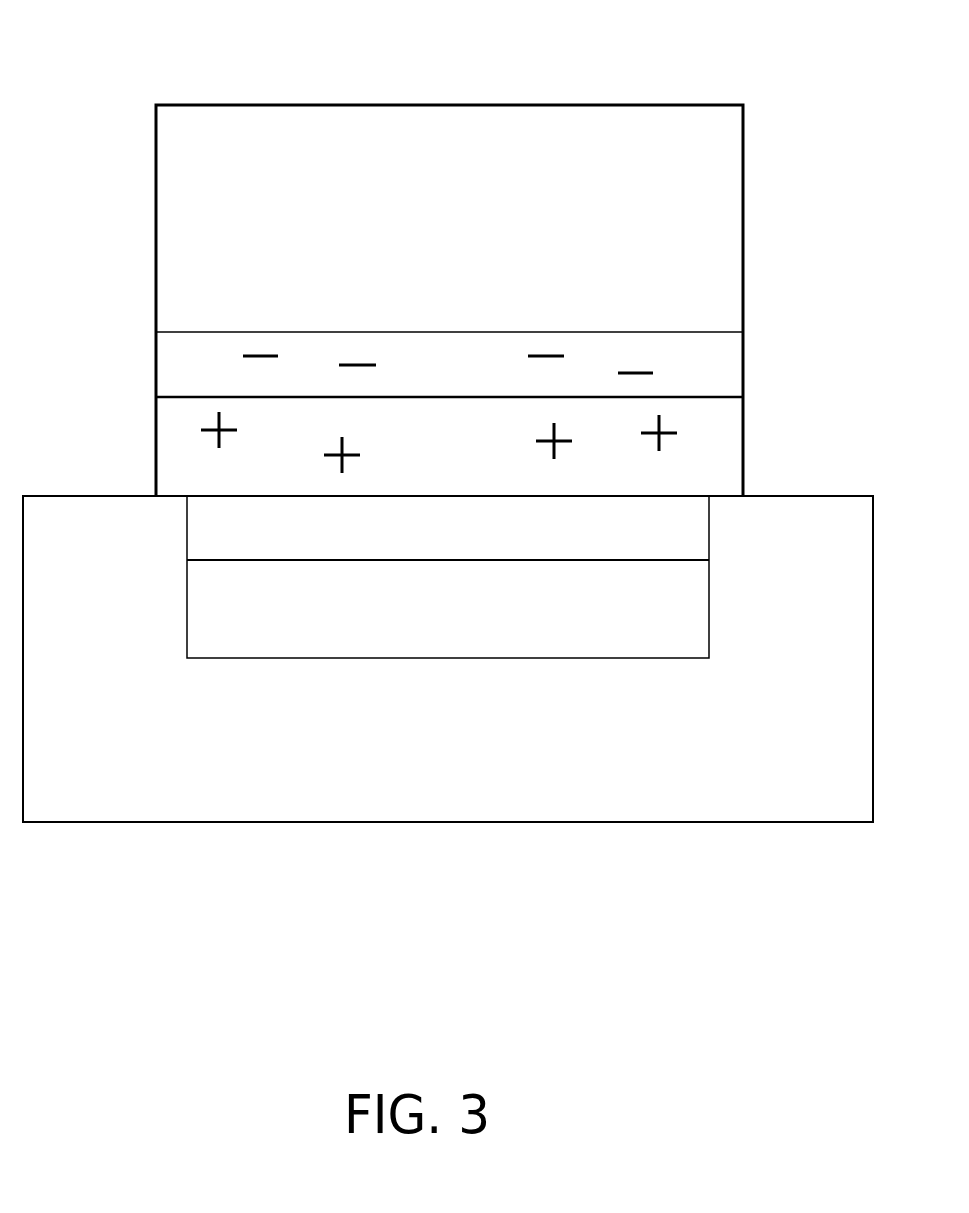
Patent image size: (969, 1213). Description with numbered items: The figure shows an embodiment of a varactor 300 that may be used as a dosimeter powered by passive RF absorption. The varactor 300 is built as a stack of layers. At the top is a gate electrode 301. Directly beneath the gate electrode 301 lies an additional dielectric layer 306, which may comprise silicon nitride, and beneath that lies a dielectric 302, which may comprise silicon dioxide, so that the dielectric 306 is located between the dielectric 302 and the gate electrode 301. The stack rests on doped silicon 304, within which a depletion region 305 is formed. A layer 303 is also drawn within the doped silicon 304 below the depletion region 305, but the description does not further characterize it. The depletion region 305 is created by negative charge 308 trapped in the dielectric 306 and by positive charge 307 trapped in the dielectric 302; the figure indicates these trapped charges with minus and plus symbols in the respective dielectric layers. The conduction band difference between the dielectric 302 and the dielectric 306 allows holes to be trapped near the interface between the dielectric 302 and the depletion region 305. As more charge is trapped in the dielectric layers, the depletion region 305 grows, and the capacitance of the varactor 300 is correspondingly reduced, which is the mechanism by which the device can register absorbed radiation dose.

The varactor 300 is at (65, 34).
The gate electrode 301 is at (467, 229).
The dielectric 302 is at (467, 460).
The buried layer 303 is at (467, 621).
The doped silicon 304 is at (426, 748).
The depletion region 305 is at (467, 538).
The additional dielectric layer 306 is at (467, 375).
The positive charge 307 is at (663, 427).
The negative charge 308 is at (636, 367).